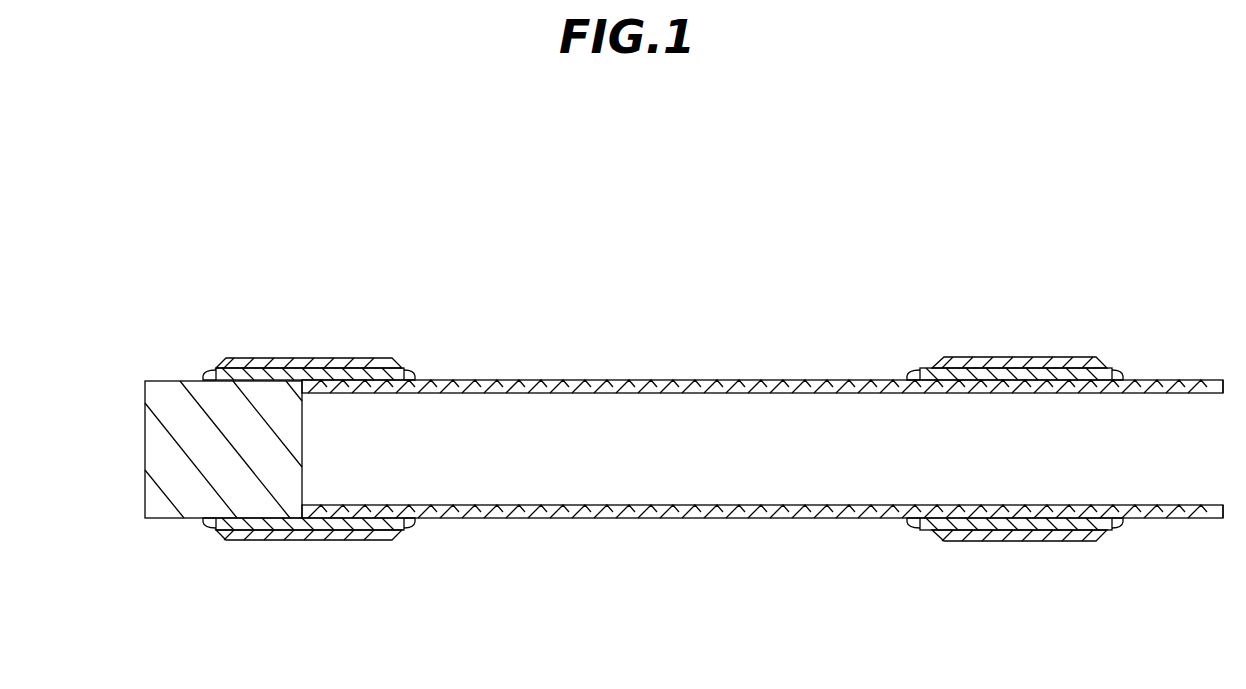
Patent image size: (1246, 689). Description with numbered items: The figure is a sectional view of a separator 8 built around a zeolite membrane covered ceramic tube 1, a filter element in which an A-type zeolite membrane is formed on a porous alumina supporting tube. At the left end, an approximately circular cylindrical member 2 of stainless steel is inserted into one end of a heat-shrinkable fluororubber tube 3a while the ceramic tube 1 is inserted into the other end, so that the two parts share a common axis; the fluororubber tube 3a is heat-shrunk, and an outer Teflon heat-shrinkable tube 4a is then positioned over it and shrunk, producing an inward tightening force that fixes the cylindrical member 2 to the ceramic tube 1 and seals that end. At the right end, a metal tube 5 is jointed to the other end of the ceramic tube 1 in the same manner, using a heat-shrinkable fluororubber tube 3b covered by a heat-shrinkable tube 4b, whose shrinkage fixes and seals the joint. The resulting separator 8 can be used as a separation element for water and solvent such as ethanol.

The zeolite membrane covered ceramic tube 1 is at (636, 380).
The approximately circular cylindrical member 2 is at (170, 519).
The heat-shrinkable fluororubber tube 3a is at (348, 371).
The heat-shrinkable tube 4a is at (272, 361).
The heat-shrinkable fluororubber tube 3b is at (1067, 371).
The heat-shrinkable tube 4b is at (985, 361).
The metal tube 5 is at (1150, 519).
The separator 8 is at (733, 340).